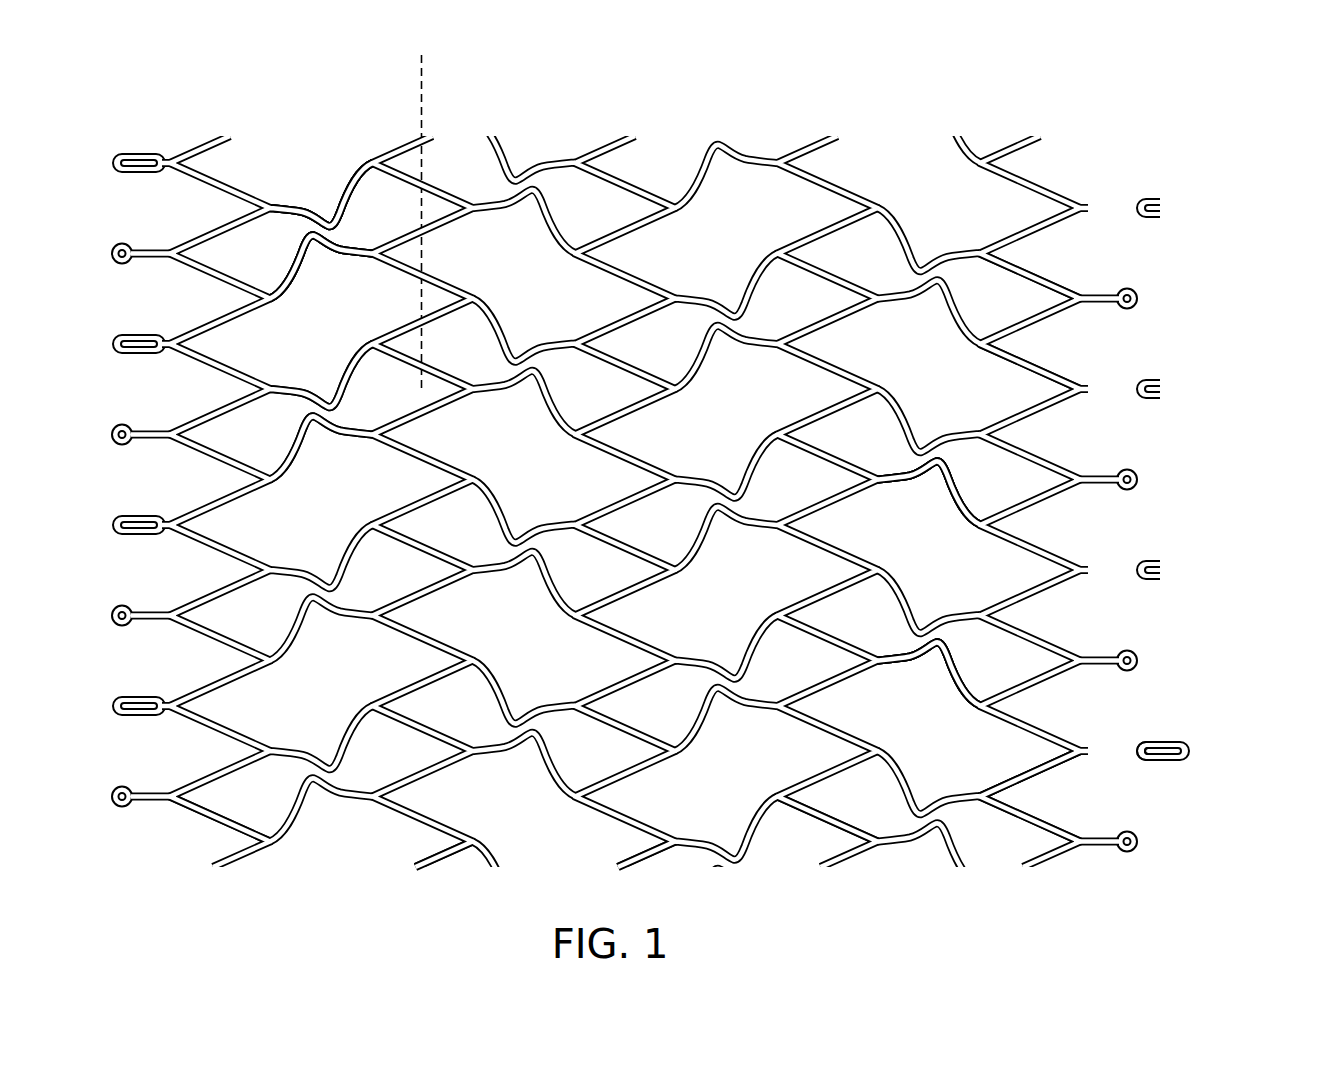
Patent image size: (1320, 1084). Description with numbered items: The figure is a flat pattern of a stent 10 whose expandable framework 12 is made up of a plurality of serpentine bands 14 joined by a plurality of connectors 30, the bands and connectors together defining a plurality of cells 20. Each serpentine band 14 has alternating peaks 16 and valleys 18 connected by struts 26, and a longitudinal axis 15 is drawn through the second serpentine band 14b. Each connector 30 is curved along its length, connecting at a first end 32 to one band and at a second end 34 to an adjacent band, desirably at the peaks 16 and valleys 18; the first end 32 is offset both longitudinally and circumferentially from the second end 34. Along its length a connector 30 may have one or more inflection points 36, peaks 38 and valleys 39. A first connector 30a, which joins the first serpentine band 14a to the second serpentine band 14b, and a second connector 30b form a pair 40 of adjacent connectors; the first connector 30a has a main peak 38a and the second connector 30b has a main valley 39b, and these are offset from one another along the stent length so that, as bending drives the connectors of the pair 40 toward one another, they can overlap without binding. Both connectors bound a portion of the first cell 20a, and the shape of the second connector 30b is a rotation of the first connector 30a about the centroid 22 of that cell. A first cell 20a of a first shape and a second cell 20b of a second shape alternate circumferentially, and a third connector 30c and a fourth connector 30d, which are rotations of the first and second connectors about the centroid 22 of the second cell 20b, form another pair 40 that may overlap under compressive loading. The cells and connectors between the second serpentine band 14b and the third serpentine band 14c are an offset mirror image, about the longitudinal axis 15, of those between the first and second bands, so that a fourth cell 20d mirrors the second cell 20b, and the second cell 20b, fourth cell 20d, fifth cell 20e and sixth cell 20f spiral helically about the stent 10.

The stent 10 is at (1212, 607).
The expandable framework 12 is at (1048, 373).
The serpentine band 14 is at (815, 815).
The first serpentine band 14a is at (205, 815).
The second serpentine band 14b is at (440, 862).
The third serpentine band 14c is at (645, 862).
The longitudinal axis 15 is at (422, 83).
The peak 16 is at (987, 798).
The valley 18 is at (1083, 758).
The cell 20 is at (951, 384).
The first cell 20a is at (227, 247).
The second cell 20b is at (223, 356).
The fourth cell 20d is at (496, 282).
The fifth cell 20e is at (710, 230).
The sixth cell 20f is at (926, 244).
The centroid 22 is at (1033, 777).
The strut 26 is at (1033, 274).
The connector 30 is at (932, 657).
The first connector 30a is at (277, 290).
The second connector 30b is at (368, 163).
The third connector 30c is at (290, 394).
The fourth connector 30d is at (357, 434).
The first end 32 is at (893, 660).
The second end 34 is at (968, 706).
The inflection point 36 is at (903, 478).
The peak 38 is at (897, 470).
The main peak 38a is at (306, 236).
The valley 39 is at (910, 477).
The main valley 39b is at (327, 227).
The pair of connectors 40 is at (272, 155).